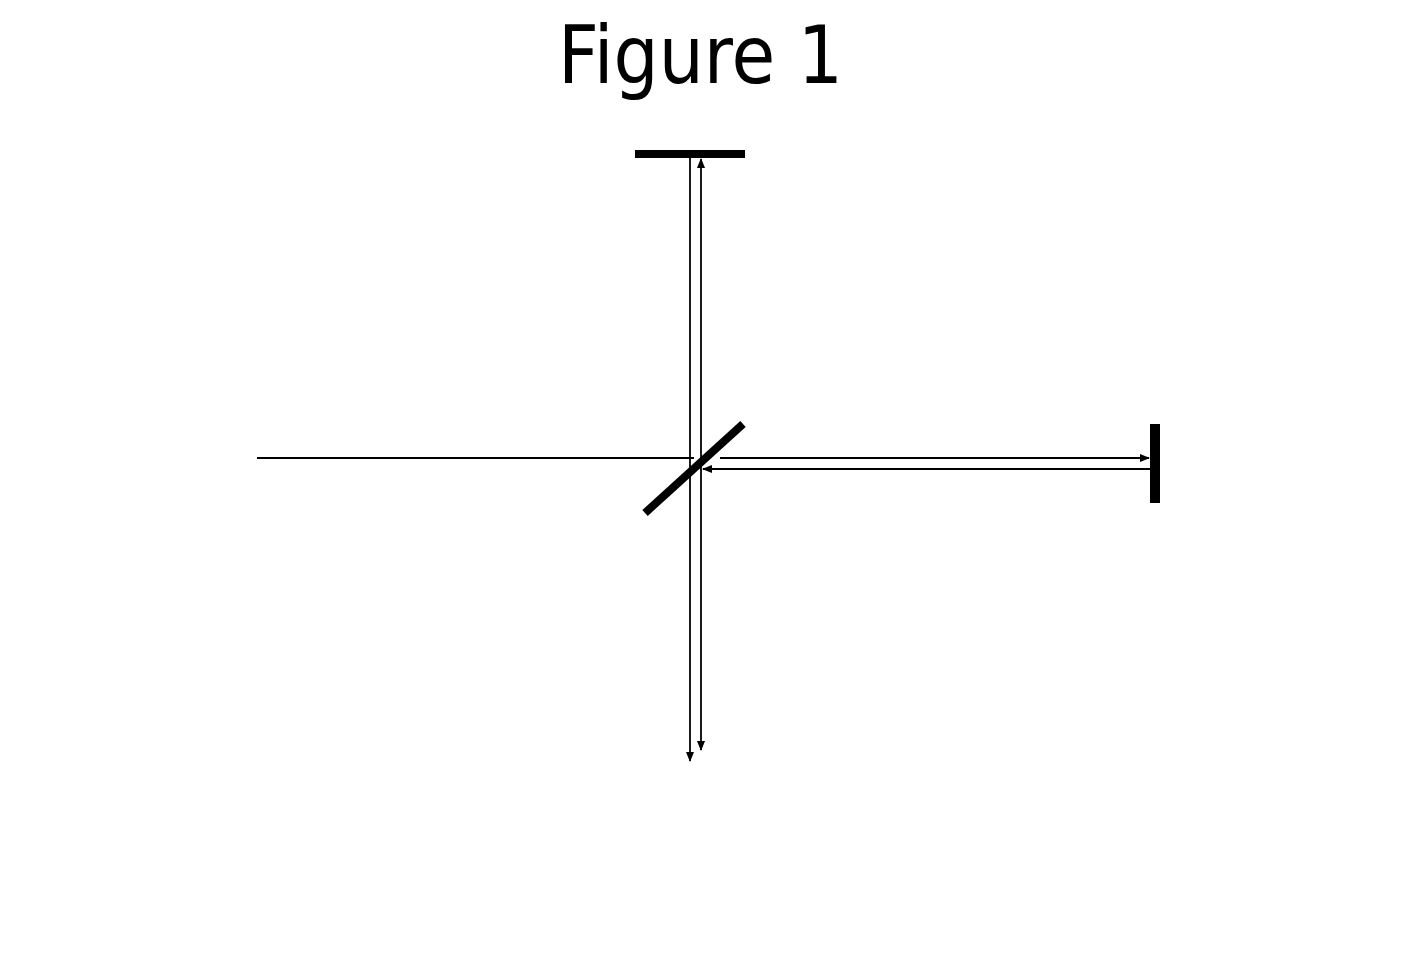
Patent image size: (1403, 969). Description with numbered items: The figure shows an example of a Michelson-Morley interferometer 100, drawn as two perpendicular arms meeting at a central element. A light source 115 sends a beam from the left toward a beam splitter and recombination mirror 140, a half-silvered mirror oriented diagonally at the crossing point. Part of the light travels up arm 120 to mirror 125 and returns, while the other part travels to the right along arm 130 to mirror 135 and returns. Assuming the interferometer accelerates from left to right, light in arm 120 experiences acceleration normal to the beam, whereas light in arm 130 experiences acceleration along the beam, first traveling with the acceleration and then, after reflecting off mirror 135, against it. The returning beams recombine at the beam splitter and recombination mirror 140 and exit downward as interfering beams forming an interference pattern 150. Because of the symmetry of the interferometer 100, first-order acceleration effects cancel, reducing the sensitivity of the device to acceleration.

The Michelson-Morley interferometer 100 is at (446, 289).
The light source 115 is at (465, 415).
The arm 120 is at (775, 308).
The mirror 125 is at (597, 147).
The arm 130 is at (926, 426).
The mirror 135 is at (1252, 463).
The beam splitter and recombination mirror 140 is at (906, 521).
The interfering beams and interference pattern 150 is at (855, 661).